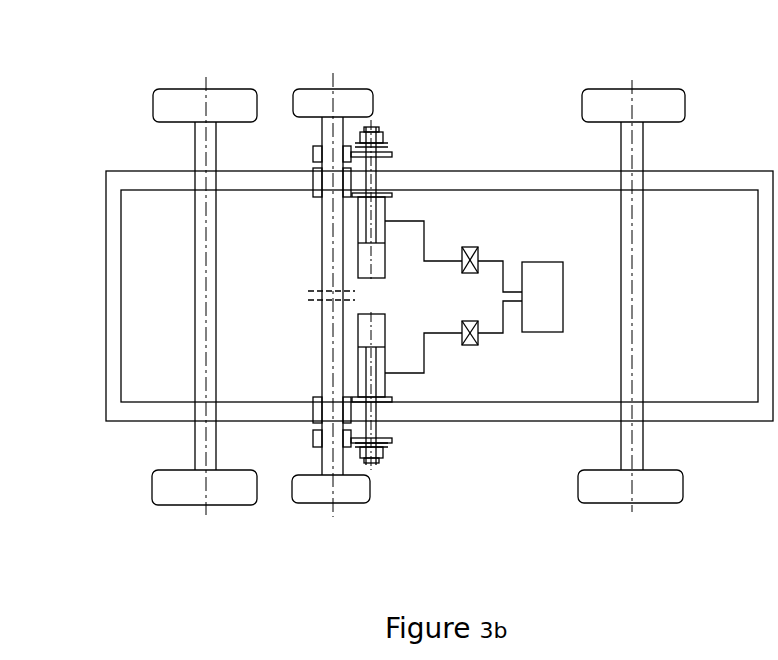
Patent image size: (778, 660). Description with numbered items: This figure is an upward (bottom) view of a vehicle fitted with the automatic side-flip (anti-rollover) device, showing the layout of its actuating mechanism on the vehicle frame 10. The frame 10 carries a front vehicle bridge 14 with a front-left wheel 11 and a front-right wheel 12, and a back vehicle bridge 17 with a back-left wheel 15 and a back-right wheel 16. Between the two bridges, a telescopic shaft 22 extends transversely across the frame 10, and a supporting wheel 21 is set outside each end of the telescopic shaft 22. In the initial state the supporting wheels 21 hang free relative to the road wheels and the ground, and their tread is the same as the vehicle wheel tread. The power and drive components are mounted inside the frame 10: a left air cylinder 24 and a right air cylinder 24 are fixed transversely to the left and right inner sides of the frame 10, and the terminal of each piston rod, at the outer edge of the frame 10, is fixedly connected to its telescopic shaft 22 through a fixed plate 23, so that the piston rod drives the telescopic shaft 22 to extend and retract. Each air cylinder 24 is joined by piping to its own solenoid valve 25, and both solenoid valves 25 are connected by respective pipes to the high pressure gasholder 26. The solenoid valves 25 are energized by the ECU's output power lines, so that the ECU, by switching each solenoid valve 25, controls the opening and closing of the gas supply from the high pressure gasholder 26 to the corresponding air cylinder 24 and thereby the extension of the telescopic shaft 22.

The vehicle frame 10 is at (113, 265).
The front-left wheel 11 is at (180, 486).
The front-right wheel 12 is at (178, 100).
The front vehicle bridge 14 is at (202, 248).
The back-left wheel 15 is at (663, 487).
The back-right wheel 16 is at (667, 107).
The back vehicle bridge 17 is at (625, 287).
The supporting wheel 21 is at (362, 105).
The telescopic shaft 22 is at (335, 455).
The fixed plate 23 is at (385, 442).
The air cylinder 24 is at (375, 377).
The solenoid valve 25 is at (478, 338).
The high pressure gasholder 26 is at (542, 308).